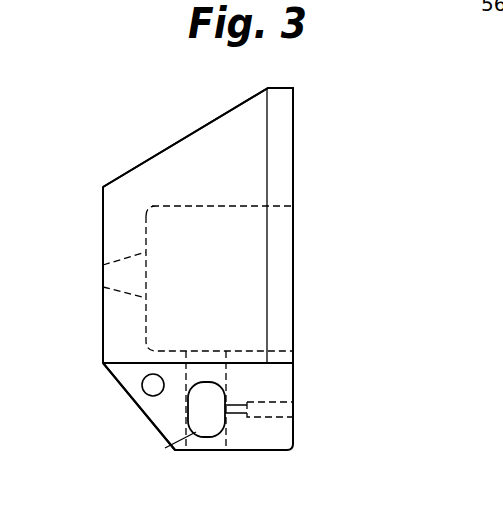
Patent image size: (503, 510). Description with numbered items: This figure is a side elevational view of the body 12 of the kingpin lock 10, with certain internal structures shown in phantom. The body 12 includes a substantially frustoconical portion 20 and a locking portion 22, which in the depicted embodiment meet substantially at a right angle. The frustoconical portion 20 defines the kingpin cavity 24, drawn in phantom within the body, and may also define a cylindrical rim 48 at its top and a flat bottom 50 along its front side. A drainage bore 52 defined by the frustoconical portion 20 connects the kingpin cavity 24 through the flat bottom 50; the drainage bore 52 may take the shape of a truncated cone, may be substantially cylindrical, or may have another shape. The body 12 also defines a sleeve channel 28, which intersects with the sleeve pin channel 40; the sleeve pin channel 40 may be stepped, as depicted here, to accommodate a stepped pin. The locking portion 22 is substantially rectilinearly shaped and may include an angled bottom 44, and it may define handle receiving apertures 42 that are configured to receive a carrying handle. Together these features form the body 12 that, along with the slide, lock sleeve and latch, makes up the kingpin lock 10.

The kingpin lock 10 is at (342, 332).
The body 12 is at (293, 177).
The frustoconical portion 20 is at (240, 105).
The locking portion 22 is at (293, 443).
The kingpin cavity 24 is at (287, 312).
The sleeve channel 28 is at (165, 448).
The sleeve pin channel 40 is at (293, 413).
The handle receiving apertures 42 is at (140, 388).
The angled bottom 44 is at (150, 425).
The cylindrical rim 48 is at (293, 88).
The flat bottom 50 is at (103, 212).
The drainage bore 52 is at (103, 285).